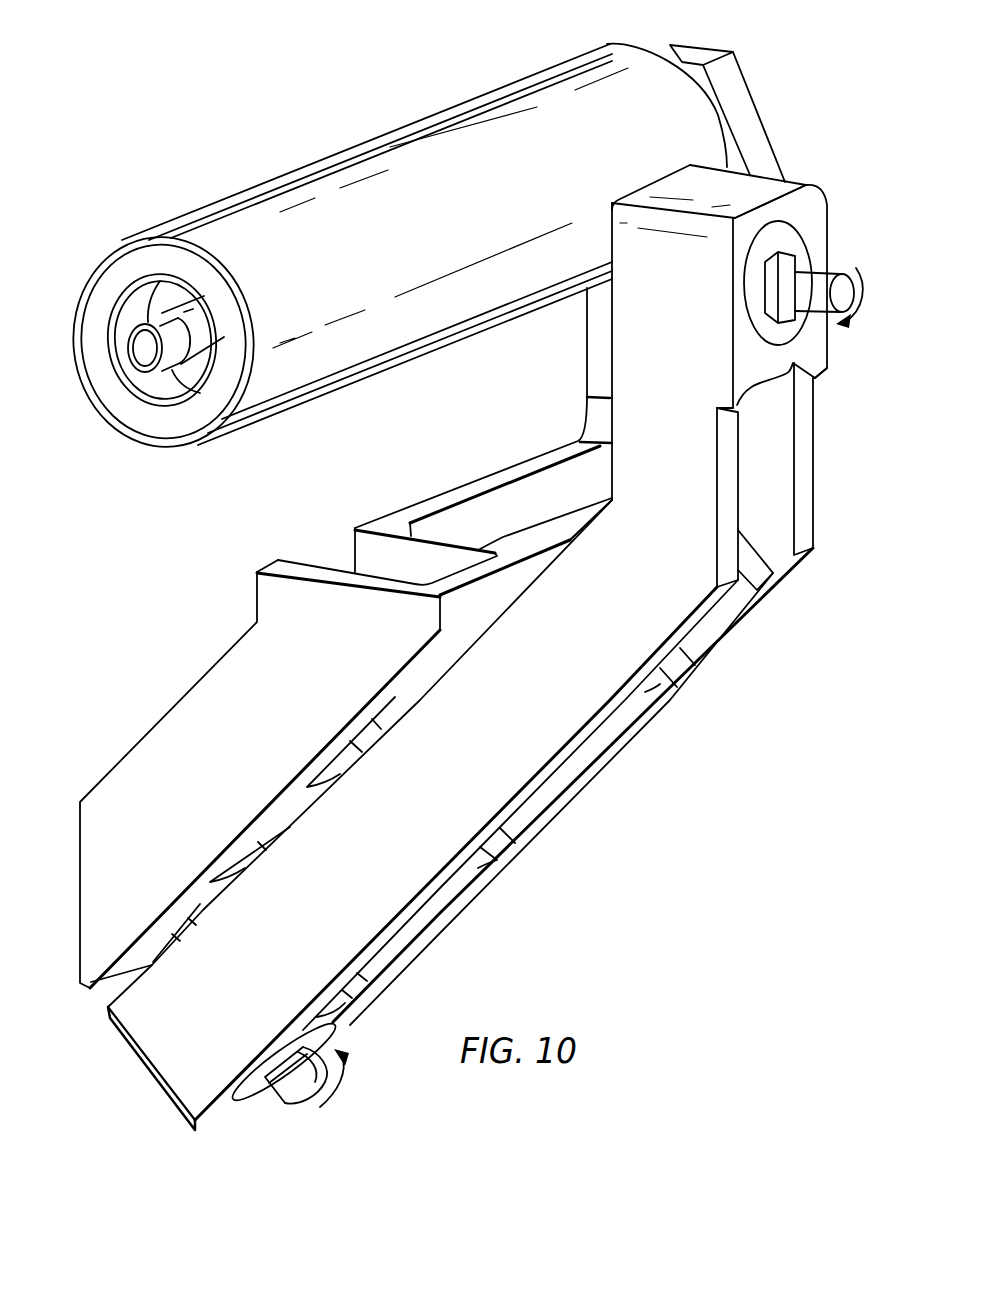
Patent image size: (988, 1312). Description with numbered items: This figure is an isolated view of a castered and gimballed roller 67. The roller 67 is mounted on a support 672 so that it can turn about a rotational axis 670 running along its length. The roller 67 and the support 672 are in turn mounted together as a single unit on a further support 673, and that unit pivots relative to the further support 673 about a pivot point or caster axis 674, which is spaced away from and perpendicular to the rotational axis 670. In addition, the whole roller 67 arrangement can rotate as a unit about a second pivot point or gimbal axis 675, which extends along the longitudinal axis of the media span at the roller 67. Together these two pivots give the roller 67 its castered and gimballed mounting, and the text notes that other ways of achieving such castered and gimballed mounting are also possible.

The castered and gimballed roller 67 is at (283, 198).
The rotational axis 670 is at (146, 348).
The support 672 is at (402, 513).
The further support 673 is at (527, 750).
The pivot point or caster axis 674 is at (287, 1094).
The pivot point or gimbal axis 675 is at (830, 274).